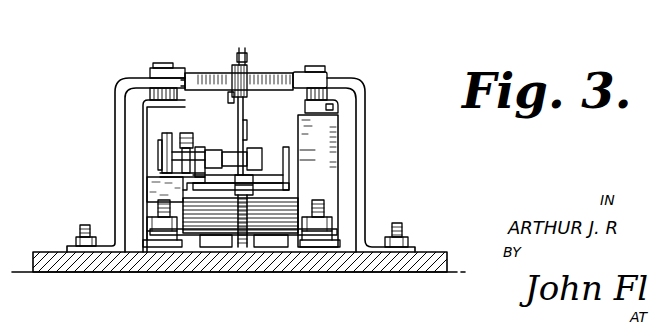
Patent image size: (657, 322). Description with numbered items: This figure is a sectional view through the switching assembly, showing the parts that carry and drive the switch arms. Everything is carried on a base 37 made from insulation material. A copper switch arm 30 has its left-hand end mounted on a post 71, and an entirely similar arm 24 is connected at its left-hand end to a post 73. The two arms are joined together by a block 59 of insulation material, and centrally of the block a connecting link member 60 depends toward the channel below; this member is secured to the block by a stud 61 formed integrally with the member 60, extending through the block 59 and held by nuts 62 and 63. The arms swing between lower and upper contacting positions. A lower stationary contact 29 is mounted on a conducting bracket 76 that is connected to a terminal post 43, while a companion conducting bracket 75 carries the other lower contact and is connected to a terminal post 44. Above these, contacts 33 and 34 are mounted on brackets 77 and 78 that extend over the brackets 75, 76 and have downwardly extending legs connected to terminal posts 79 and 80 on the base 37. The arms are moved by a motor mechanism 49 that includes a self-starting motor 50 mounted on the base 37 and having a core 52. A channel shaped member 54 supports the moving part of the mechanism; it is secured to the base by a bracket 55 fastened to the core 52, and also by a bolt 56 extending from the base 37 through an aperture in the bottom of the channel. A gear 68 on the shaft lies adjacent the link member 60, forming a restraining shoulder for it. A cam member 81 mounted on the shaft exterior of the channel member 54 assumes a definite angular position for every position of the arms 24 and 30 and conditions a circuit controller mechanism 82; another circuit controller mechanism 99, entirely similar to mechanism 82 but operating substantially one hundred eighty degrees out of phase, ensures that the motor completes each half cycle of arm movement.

The switch arm 24 is at (188, 85).
The lower stationary contact 29 is at (332, 127).
The switch arm 30 is at (310, 66).
The upper stationary contact 33 is at (157, 88).
The upper stationary contact 34 is at (323, 82).
The base 37 is at (364, 266).
The terminal post 43 is at (320, 206).
The terminal post 44 is at (160, 208).
The motor mechanism 49 is at (220, 144).
The motor 50 is at (200, 212).
The core 52 is at (218, 218).
The channel shaped member 54 is at (290, 177).
The bracket 55 is at (272, 167).
The bolt 56 is at (250, 238).
The block of insulation material 59 is at (262, 78).
The connecting link member 60 is at (244, 112).
The stud 61 is at (244, 50).
The nut 62 is at (236, 68).
The nut 63 is at (228, 100).
The gear 68 is at (247, 130).
The post 71 is at (337, 108).
The post 73 is at (143, 108).
The conducting bracket 75 is at (148, 187).
The conducting bracket 76 is at (328, 157).
The bracket 77 is at (115, 90).
The bracket 78 is at (360, 115).
The terminal post 79 is at (73, 245).
The terminal post 80 is at (397, 225).
The cam member 81 is at (163, 148).
The circuit controller mechanism 82 is at (163, 143).
The circuit controller mechanism 99 is at (172, 135).